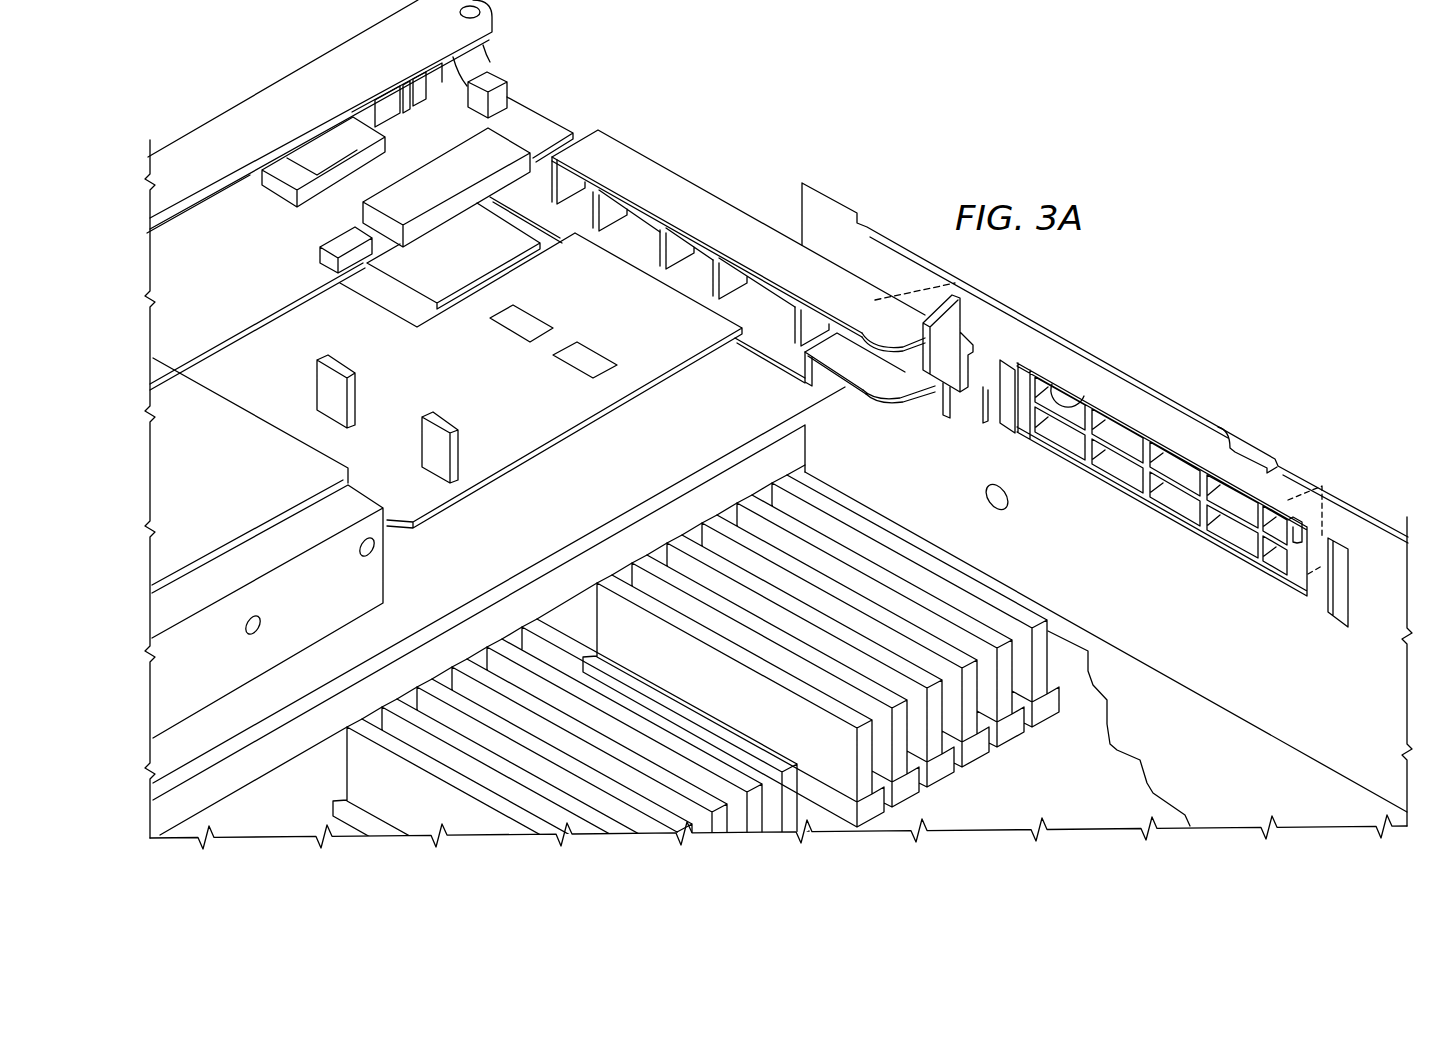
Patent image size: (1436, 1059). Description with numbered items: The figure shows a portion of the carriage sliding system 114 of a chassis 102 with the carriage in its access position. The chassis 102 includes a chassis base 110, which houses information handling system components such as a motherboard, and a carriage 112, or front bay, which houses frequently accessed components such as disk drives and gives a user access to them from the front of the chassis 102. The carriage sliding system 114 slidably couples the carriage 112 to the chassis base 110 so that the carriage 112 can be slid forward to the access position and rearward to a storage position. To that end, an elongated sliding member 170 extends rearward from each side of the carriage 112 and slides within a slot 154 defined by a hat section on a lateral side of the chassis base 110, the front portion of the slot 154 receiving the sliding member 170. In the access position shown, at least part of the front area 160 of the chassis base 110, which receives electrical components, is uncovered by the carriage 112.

The chassis 102 is at (1035, 325).
The chassis base 110 is at (1147, 685).
The carriage 112 is at (545, 98).
The carriage sliding system 114 is at (924, 435).
The slot 154 is at (1058, 385).
The front area 160 is at (1207, 780).
The sliding member 170 is at (1178, 447).